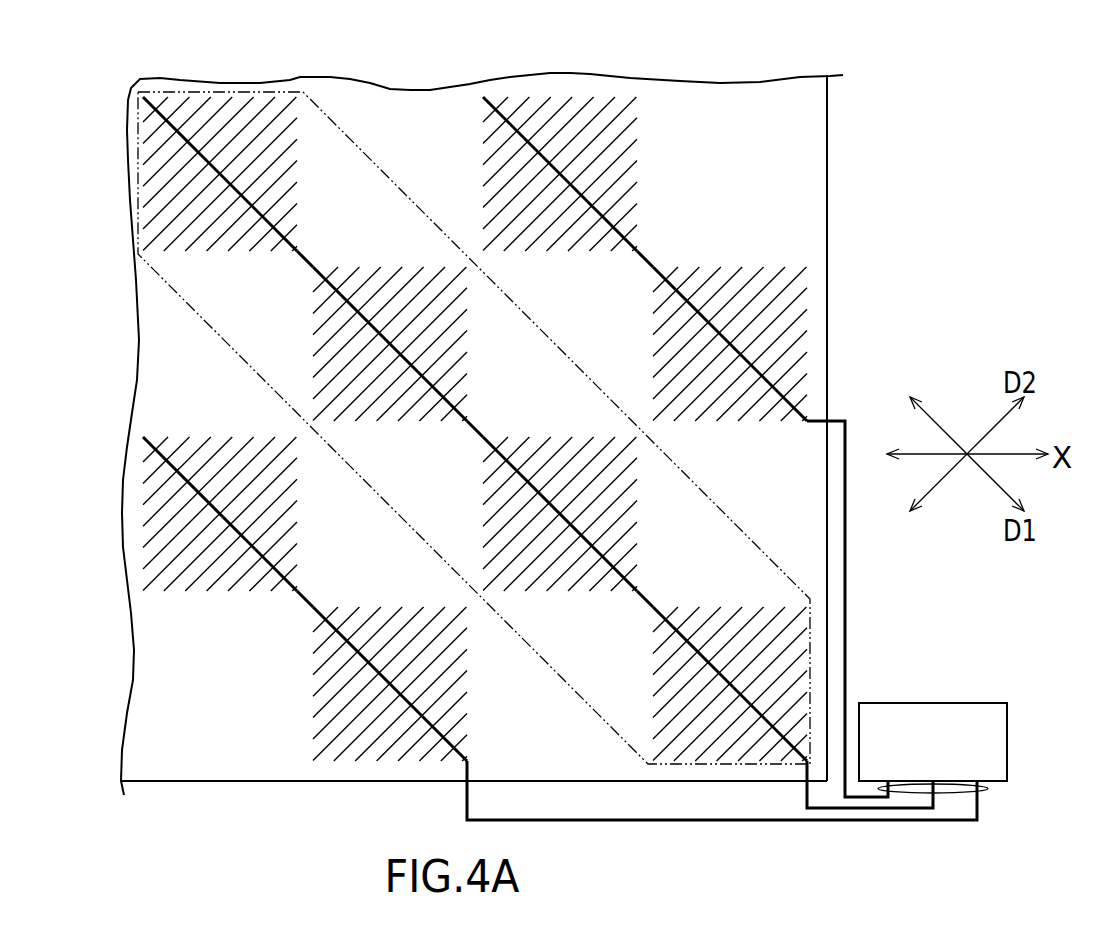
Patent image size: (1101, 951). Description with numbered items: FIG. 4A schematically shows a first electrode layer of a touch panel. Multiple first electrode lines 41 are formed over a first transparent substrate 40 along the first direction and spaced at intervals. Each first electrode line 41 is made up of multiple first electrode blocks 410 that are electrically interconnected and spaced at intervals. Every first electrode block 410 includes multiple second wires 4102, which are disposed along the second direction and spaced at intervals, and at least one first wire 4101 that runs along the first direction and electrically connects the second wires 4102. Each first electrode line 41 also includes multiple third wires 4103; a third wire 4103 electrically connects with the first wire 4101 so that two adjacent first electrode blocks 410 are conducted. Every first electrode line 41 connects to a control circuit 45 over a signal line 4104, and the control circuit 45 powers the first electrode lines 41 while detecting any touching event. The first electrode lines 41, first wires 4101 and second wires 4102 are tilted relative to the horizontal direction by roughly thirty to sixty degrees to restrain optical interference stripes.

The first transparent substrate 40 is at (827, 166).
The first electrode line 41 is at (343, 131).
The control circuit 45 is at (1007, 742).
The first electrode block 410 is at (155, 142).
The first wire 4101 is at (168, 103).
The second wire 4102 is at (283, 192).
The third wire 4103 is at (305, 254).
The signal line 4104 is at (952, 794).